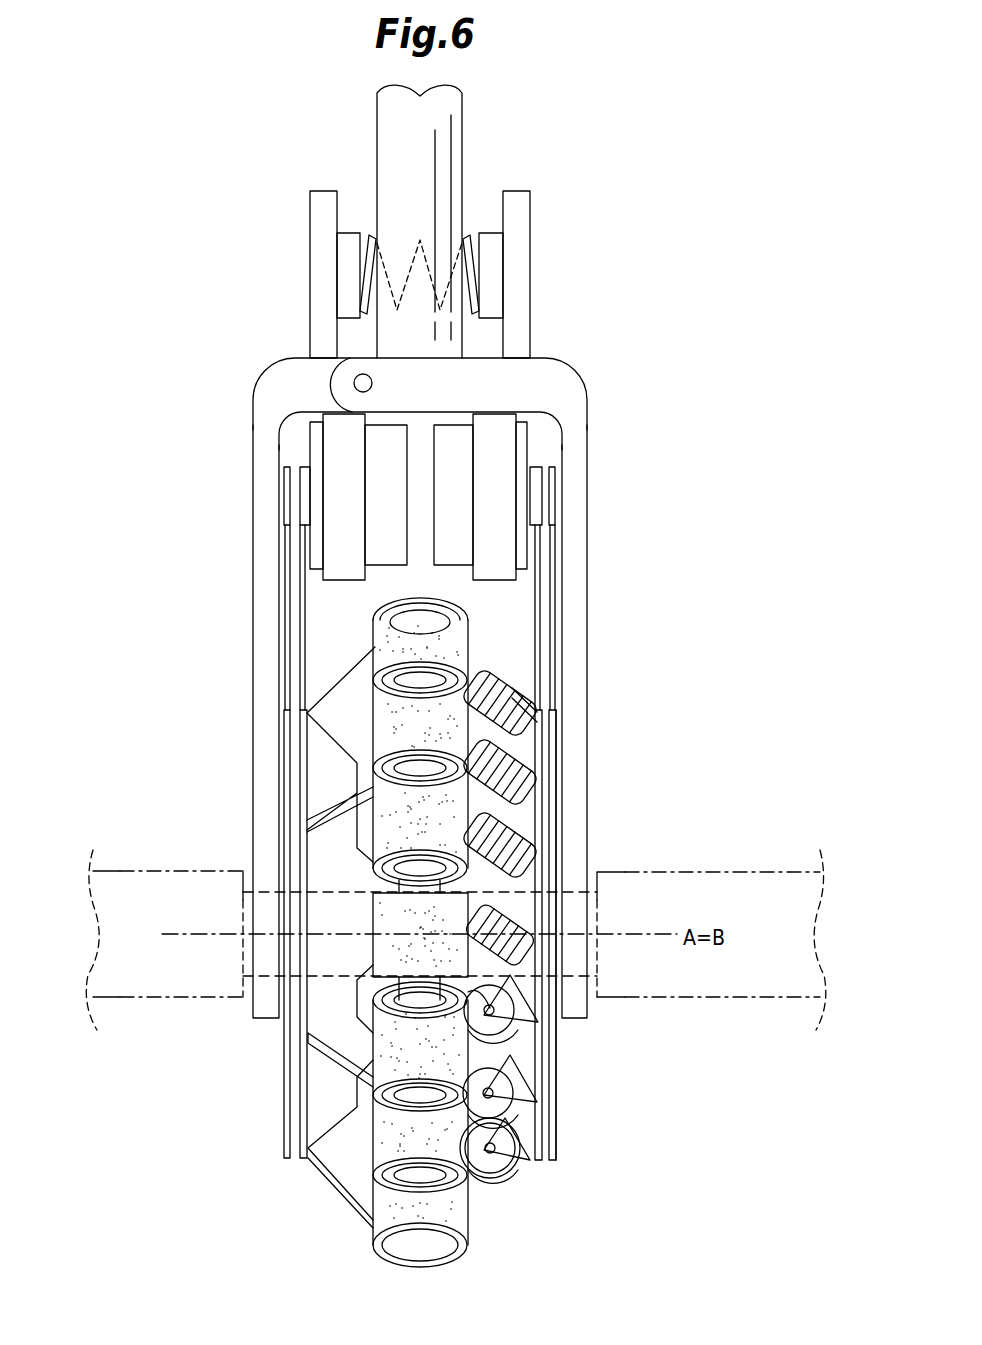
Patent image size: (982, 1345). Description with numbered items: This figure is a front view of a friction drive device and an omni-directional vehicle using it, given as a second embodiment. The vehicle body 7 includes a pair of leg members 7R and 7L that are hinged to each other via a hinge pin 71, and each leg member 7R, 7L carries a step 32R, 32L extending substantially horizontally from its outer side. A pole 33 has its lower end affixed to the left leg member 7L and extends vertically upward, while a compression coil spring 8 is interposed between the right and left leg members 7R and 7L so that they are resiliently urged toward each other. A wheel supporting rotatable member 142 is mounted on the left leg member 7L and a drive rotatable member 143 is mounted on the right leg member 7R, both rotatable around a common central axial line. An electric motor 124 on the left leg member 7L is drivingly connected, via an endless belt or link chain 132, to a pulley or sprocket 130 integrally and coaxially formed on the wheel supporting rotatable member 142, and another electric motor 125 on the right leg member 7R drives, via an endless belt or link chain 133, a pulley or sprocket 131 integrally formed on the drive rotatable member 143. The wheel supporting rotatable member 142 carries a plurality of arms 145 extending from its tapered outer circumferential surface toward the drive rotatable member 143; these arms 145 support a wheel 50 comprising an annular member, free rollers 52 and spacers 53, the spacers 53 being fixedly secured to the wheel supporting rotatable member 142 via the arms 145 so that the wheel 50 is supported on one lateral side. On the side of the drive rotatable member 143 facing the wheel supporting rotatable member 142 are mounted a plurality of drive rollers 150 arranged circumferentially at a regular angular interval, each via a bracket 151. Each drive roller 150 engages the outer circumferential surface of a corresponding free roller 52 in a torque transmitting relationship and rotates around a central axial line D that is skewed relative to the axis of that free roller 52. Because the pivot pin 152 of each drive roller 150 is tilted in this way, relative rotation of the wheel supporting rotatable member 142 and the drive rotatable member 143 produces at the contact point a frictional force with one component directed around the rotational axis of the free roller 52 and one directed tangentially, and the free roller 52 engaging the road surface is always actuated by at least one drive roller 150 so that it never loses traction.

The pole 33 is at (387, 133).
The compression coil spring 8 is at (463, 238).
The hinge pin 71 is at (360, 380).
The vehicle body 7 is at (625, 511).
The left leg member 7L is at (257, 563).
The right leg member 7R is at (575, 563).
The electric motor 124 is at (373, 455).
The electric motor 125 is at (460, 465).
The endless belt 132 is at (295, 625).
The endless belt 133 is at (545, 610).
The pulley 130 is at (310, 1038).
The pulley 131 is at (555, 1072).
The arms 145 is at (347, 820).
The wheel 50 is at (370, 1258).
The wheel supporting rotatable member 142 is at (320, 913).
The drive rotatable member 143 is at (560, 905).
The free rollers 52 is at (385, 1030).
The spacers 53 is at (490, 1008).
The drive rollers 150 is at (490, 695).
The bracket 151 is at (540, 705).
The pivot pin 152 is at (500, 1165).
The step 32L is at (113, 871).
The step 32R is at (748, 872).
The central axial line D is at (537, 870).